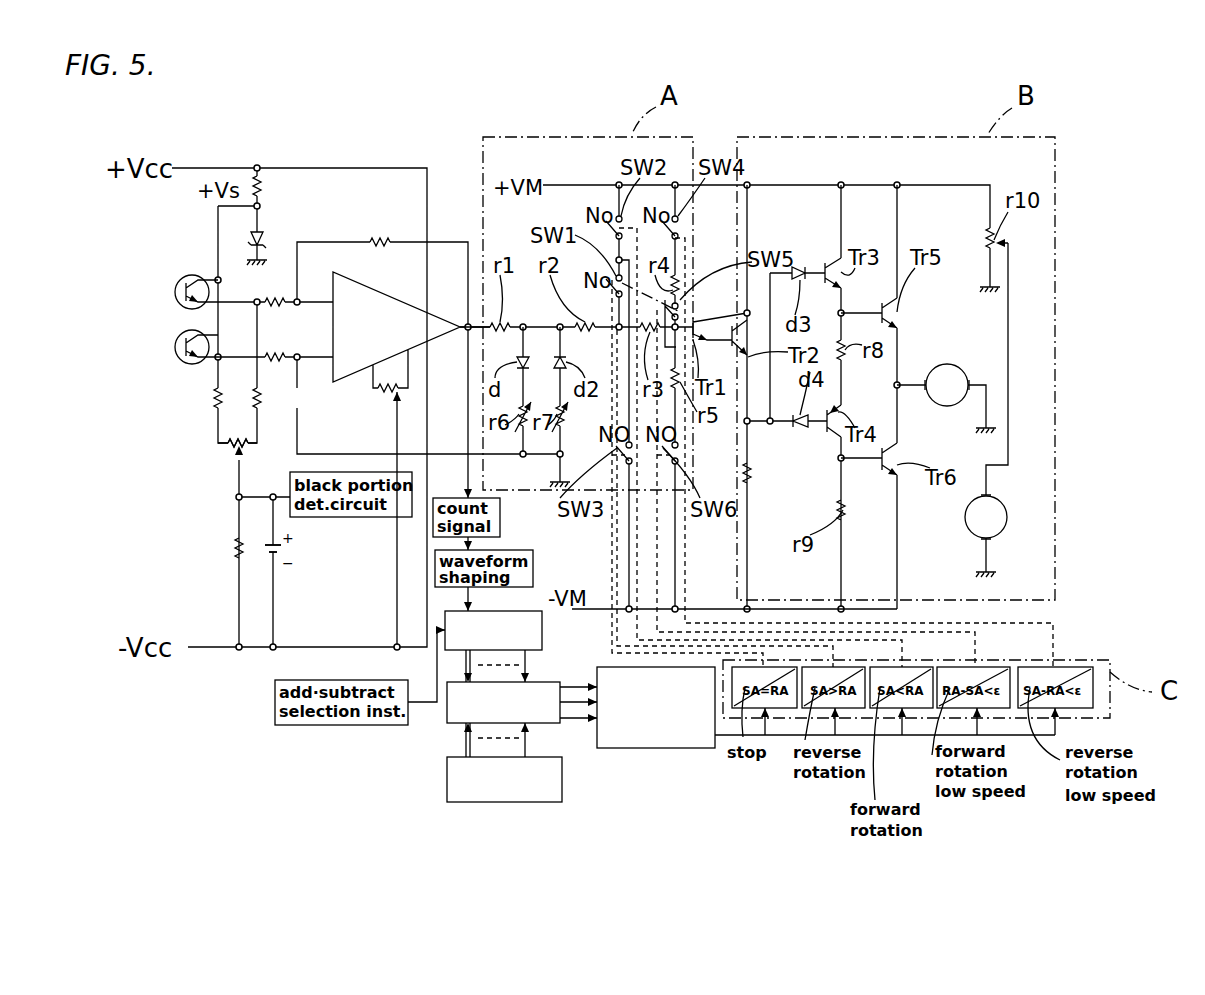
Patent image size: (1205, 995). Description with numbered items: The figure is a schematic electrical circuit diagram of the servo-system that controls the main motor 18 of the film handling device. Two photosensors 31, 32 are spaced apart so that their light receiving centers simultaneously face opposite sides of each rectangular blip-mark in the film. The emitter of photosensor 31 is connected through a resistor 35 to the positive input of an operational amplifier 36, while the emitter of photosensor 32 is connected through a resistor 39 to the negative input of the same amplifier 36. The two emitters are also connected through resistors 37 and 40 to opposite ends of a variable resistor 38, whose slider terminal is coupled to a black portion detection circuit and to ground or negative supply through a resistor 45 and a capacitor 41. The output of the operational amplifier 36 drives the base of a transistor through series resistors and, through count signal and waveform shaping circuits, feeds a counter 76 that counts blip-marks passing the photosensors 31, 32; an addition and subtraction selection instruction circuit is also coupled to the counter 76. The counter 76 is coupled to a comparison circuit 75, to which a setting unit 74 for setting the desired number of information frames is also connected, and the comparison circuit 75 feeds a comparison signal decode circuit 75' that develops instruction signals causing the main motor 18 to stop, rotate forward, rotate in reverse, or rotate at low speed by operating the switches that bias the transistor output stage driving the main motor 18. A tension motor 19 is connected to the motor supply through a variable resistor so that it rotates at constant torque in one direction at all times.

The photosensor 31 is at (180, 280).
The photosensor 32 is at (177, 336).
The resistor 35 is at (277, 298).
The operational amplifier 36 is at (367, 283).
The resistor 37 is at (257, 396).
The variable resistor 38 is at (232, 448).
The resistor 39 is at (274, 352).
The resistor 40 is at (212, 400).
The capacitor 41 is at (282, 550).
The resistor 45 is at (235, 545).
The main motor 18 is at (962, 365).
The tension motor 19 is at (1006, 520).
The setting unit 74 is at (518, 803).
The comparison circuit 75 is at (525, 722).
The comparison signal decode circuit 75' is at (656, 739).
The counter 76 is at (542, 627).